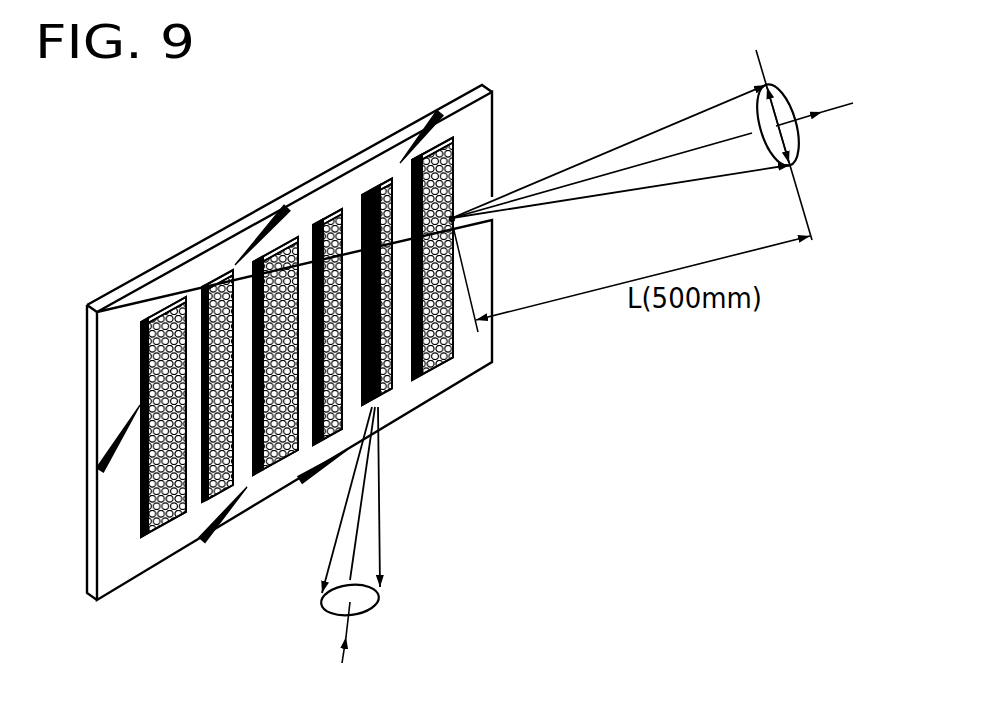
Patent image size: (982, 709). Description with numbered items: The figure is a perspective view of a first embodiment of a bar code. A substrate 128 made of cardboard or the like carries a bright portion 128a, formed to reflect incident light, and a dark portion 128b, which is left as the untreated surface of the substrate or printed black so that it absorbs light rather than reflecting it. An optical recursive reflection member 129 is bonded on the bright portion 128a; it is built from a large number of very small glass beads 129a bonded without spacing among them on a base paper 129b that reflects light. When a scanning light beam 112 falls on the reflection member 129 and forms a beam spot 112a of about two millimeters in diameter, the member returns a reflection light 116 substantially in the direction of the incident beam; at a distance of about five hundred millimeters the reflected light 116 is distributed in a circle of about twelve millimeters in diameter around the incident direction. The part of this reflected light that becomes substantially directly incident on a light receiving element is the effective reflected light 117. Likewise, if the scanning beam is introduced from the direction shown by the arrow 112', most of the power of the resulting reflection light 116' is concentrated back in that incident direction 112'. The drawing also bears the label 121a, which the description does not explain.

The mask plate assembly 121a is at (193, 197).
The substrate 128 is at (150, 277).
The bright portion 128a is at (373, 182).
The dark portion 128b is at (350, 217).
The reflection light 116 is at (652, 144).
The effective reflected light 117 is at (652, 151).
The scanning light beam 112 is at (813, 143).
The beam spot 112a is at (455, 221).
The optical recursive reflection member 129 is at (597, 363).
The glass bead 129a is at (457, 338).
The base paper 129b is at (413, 381).
The reflection light 116' is at (391, 500).
The incident direction 112' is at (389, 622).